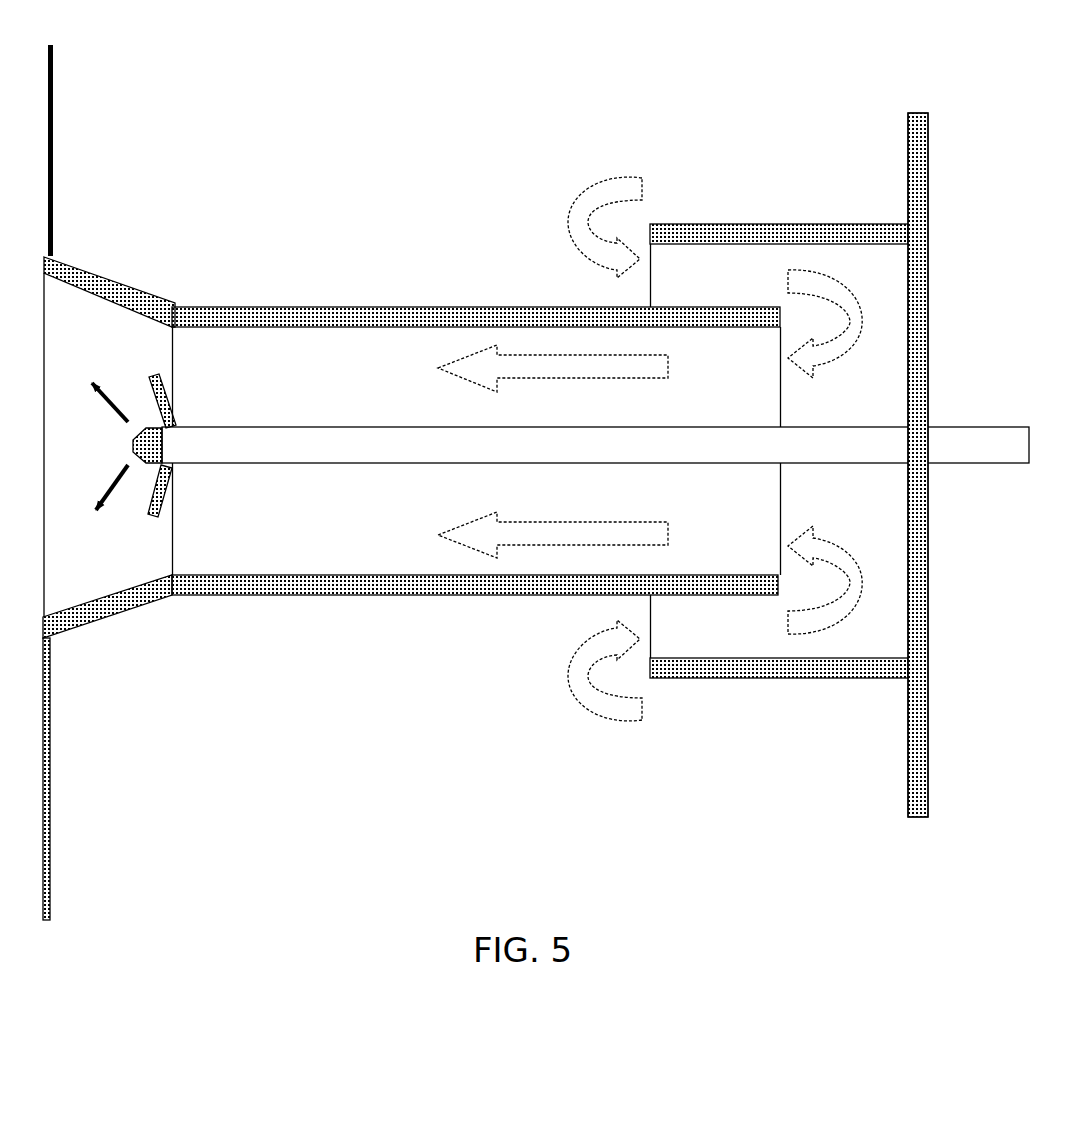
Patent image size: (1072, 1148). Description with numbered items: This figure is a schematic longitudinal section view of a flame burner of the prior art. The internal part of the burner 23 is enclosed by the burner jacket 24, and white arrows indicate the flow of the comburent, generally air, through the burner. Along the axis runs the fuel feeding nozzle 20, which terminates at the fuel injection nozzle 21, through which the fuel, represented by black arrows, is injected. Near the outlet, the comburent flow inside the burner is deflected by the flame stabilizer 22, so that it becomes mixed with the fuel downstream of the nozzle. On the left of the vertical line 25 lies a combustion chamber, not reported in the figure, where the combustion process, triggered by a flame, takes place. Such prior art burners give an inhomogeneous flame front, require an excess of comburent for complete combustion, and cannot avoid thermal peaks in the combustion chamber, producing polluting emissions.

The fuel feeding nozzle 20 is at (327, 468).
The fuel injection nozzle 21 is at (150, 470).
The flame stabilizer 22 is at (164, 384).
The internal part of the burner 23 is at (321, 367).
The burner jacket 24 is at (469, 599).
The vertical line 25 is at (49, 829).